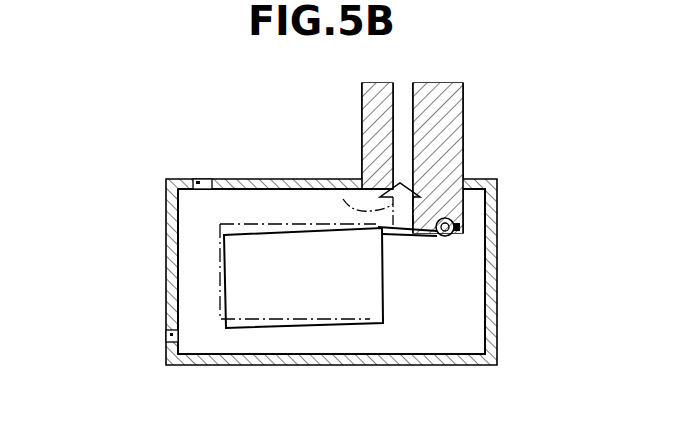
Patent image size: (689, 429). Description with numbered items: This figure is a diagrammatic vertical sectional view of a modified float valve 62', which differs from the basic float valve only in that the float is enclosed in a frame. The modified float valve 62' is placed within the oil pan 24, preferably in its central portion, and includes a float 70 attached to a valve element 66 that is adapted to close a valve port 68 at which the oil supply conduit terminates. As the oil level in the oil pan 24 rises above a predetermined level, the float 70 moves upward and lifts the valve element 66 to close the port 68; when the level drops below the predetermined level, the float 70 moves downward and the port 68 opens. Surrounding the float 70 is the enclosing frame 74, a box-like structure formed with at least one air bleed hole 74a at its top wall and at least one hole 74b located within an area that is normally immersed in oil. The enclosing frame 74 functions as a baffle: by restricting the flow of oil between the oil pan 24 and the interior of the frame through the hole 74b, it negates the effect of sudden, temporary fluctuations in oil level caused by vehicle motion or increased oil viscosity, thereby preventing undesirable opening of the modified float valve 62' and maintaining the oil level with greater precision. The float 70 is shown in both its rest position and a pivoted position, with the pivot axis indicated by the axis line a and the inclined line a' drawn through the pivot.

The enclosing frame 74 is at (170, 213).
The air bleed hole 74a is at (207, 181).
The hole 74b is at (168, 335).
The oil pan 24 is at (150, 297).
The float 70 is at (315, 293).
The valve port 68 is at (402, 180).
The valve element 66 is at (344, 199).
The modified float valve 62' is at (532, 115).
The pivot axis line a' is at (531, 191).
The axis line a is at (356, 277).